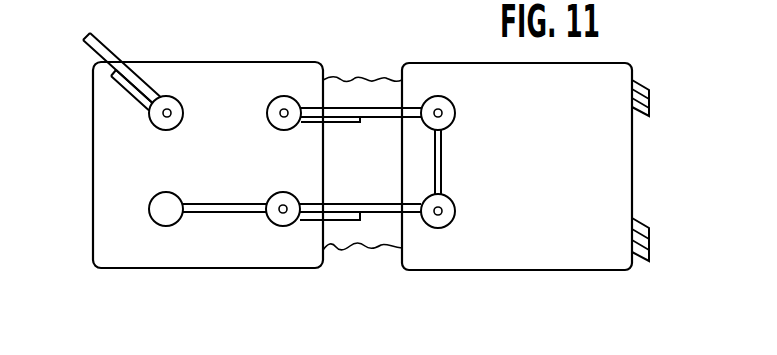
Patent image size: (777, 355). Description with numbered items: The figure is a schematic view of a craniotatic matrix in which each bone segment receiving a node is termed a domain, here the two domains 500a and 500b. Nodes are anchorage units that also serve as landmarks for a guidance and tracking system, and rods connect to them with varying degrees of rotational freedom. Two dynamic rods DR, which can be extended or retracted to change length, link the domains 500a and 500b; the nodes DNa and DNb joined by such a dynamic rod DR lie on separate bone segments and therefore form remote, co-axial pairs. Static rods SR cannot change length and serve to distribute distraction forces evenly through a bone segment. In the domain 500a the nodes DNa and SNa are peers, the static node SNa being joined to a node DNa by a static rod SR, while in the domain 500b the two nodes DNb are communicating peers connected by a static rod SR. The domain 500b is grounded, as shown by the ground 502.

The domain 500a is at (158, 253).
The domain 500b is at (615, 183).
The ground 502 is at (647, 262).
The dynamic rod mechanism DR is at (138, 72).
The static rod SR is at (227, 212).
The co-axial node of domain 500a DNa is at (283, 208).
The co-axial node of domain 500b DNb is at (440, 211).
The static node SNa is at (163, 212).